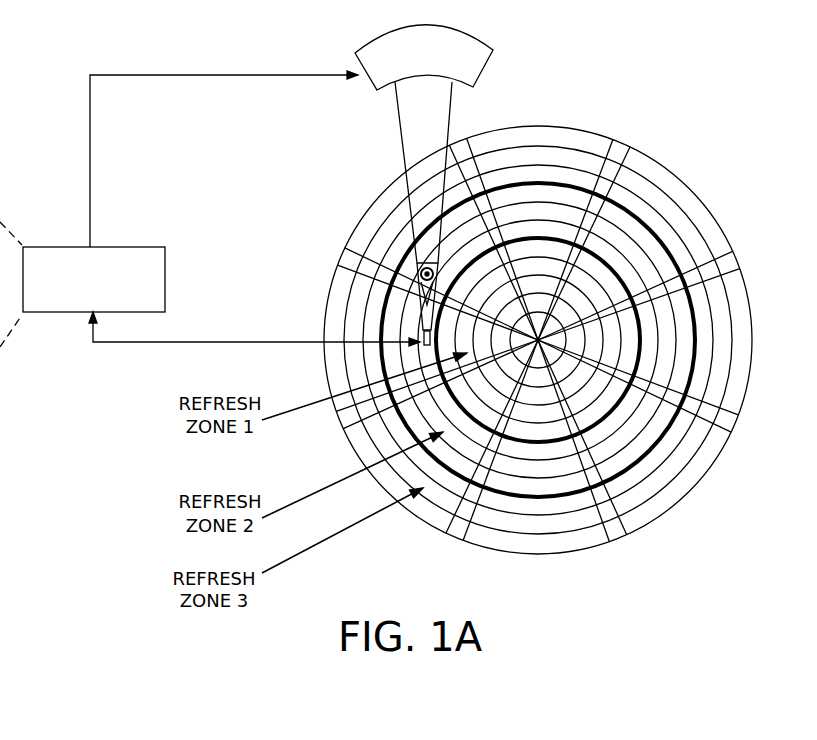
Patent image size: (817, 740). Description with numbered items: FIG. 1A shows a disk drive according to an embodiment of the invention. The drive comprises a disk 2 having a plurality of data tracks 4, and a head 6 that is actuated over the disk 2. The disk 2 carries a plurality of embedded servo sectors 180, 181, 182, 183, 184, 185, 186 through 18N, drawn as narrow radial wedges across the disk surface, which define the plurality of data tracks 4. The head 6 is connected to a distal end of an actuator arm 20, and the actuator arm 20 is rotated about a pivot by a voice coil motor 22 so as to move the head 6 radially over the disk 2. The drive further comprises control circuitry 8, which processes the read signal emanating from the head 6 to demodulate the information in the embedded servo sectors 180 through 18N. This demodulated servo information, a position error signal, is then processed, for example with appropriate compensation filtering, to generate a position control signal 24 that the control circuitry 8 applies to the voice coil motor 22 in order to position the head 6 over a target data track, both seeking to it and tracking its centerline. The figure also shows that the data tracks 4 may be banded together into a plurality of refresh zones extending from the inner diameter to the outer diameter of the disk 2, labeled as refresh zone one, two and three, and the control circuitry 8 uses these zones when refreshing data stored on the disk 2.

The disk 2 is at (686, 175).
The tracks 4 is at (546, 142).
The head 6 is at (420, 346).
The control circuitry 8 is at (134, 247).
The embedded servo sector 180 is at (621, 142).
The embedded servo sector 181 is at (738, 258).
The embedded servo sector 182 is at (740, 425).
The embedded servo sector 183 is at (615, 538).
The embedded servo sector 184 is at (455, 537).
The embedded servo sector 185 is at (342, 427).
The embedded servo sector 186 is at (344, 250).
The embedded servo sector 18N is at (462, 144).
The actuator arm 20 is at (405, 152).
The voice coil motor 22 is at (375, 91).
The position control signal 24 is at (90, 149).